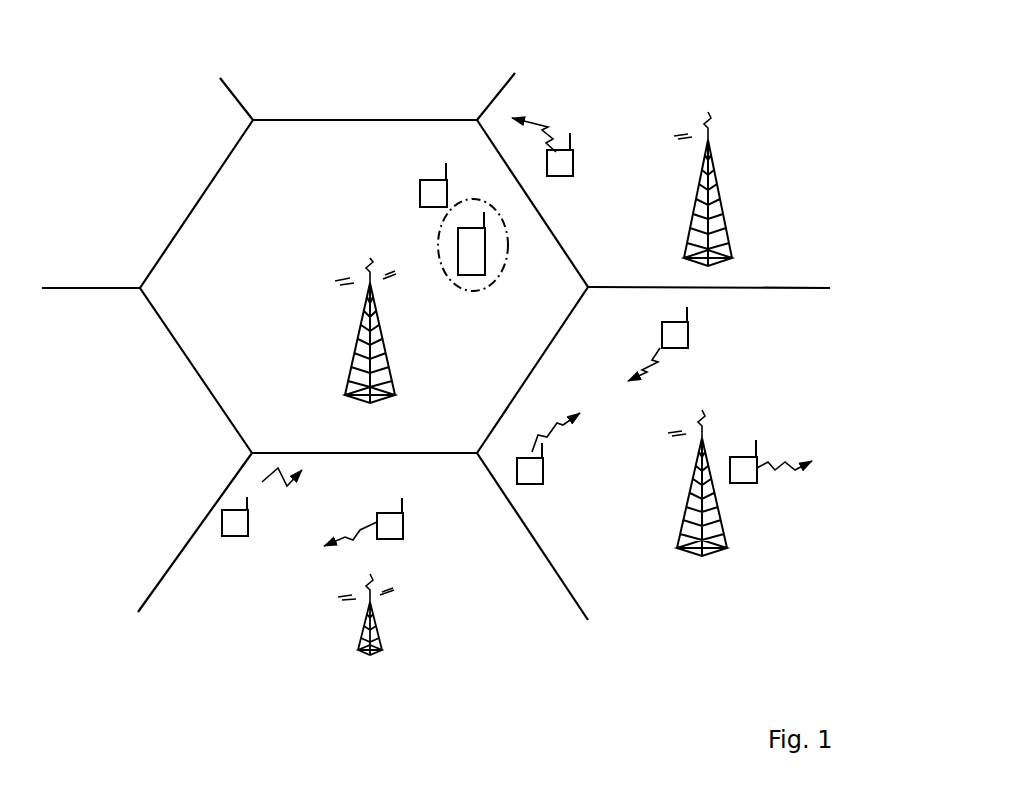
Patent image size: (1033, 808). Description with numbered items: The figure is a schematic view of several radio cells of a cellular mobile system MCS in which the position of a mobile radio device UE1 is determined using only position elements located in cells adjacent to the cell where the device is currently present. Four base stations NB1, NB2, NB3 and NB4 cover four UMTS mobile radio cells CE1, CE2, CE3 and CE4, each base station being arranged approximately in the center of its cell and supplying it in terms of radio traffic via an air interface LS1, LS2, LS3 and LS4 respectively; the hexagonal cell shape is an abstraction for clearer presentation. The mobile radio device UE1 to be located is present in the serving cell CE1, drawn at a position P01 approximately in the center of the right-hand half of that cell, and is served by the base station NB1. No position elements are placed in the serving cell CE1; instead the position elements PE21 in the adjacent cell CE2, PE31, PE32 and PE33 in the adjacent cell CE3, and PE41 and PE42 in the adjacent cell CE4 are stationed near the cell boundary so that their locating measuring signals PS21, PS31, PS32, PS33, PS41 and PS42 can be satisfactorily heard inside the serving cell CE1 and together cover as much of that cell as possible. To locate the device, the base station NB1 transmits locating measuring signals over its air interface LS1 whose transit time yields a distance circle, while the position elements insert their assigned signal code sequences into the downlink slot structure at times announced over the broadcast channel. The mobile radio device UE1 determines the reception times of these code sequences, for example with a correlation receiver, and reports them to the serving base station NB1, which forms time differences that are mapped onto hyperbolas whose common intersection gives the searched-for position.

The serving mobile radio cell CE1 is at (338, 132).
The adjacent mobile radio cell CE2 is at (630, 133).
The adjacent mobile radio cell CE3 is at (790, 357).
The adjacent mobile radio cell CE4 is at (238, 632).
The cellular mobile system MCS is at (517, 642).
The base station NB1 is at (360, 405).
The base station NB2 is at (716, 206).
The base station NB3 is at (713, 560).
The base station NB4 is at (360, 640).
The air interface LS1 is at (345, 280).
The air interface LS2 is at (712, 139).
The air interface LS3 is at (712, 432).
The air interface LS4 is at (350, 598).
The mobile radio device UE1 is at (473, 291).
The position of user equipment P01 is at (508, 252).
The position element PE21 is at (560, 150).
The positioning signal in second cell PS21 is at (527, 142).
The position element PE31 is at (690, 330).
The first positioning signal in third cell PS31 is at (633, 367).
The position element PE32 is at (530, 485).
The second positioning signal in third cell PS32 is at (575, 428).
The third positioning element in third cell PE33 is at (738, 485).
The third positioning signal in third cell PS33 is at (800, 472).
The position element PE41 is at (405, 522).
The first positioning signal in fourth cell PS41 is at (330, 535).
The position element PE42 is at (222, 522).
The second positioning signal in fourth cell PS42 is at (265, 480).